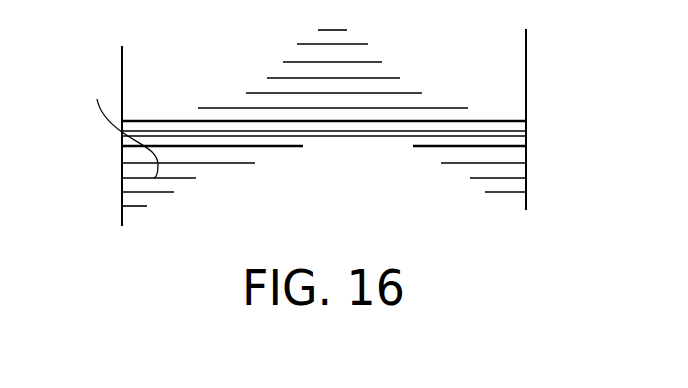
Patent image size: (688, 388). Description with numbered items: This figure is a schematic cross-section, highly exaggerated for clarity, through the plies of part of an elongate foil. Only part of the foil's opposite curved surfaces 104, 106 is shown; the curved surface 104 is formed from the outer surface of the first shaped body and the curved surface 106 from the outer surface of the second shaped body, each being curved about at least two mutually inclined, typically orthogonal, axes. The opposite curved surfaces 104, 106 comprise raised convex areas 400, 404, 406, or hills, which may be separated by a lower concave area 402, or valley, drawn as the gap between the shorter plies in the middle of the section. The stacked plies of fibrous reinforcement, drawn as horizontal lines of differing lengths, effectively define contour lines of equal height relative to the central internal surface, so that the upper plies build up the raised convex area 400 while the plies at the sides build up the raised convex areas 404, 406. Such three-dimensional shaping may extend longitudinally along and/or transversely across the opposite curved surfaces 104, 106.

The curved surface 104 is at (277, 70).
The curved surface 106 is at (143, 206).
The raised convex area 400 is at (371, 62).
The gap region 402 is at (345, 160).
The raised convex area 404 is at (115, 125).
The raised convex area 406 is at (490, 177).